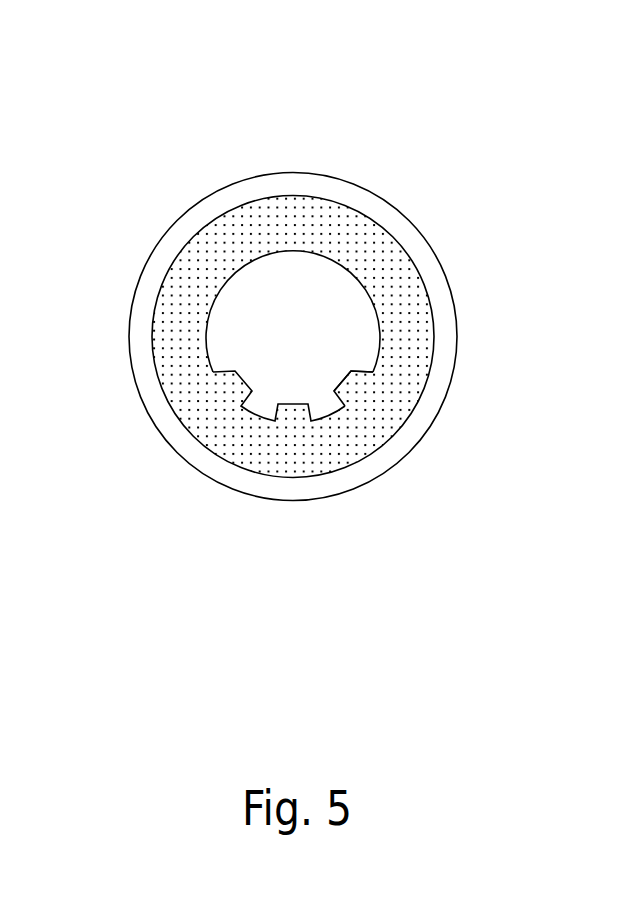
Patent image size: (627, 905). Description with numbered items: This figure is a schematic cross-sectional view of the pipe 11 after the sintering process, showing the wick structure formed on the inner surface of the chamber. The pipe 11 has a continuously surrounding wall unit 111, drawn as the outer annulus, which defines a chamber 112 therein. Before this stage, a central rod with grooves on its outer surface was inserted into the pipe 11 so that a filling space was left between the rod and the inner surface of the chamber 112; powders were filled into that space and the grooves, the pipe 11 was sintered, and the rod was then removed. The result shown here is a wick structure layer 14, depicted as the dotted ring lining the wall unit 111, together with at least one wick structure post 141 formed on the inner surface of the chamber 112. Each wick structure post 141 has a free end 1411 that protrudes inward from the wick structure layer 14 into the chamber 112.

The pipe 11 is at (322, 269).
The wall unit 111 is at (403, 443).
The chamber 112 is at (237, 332).
The wick structure layer 14 is at (322, 330).
The wick structure post 141 is at (353, 390).
The free end 1411 is at (344, 370).